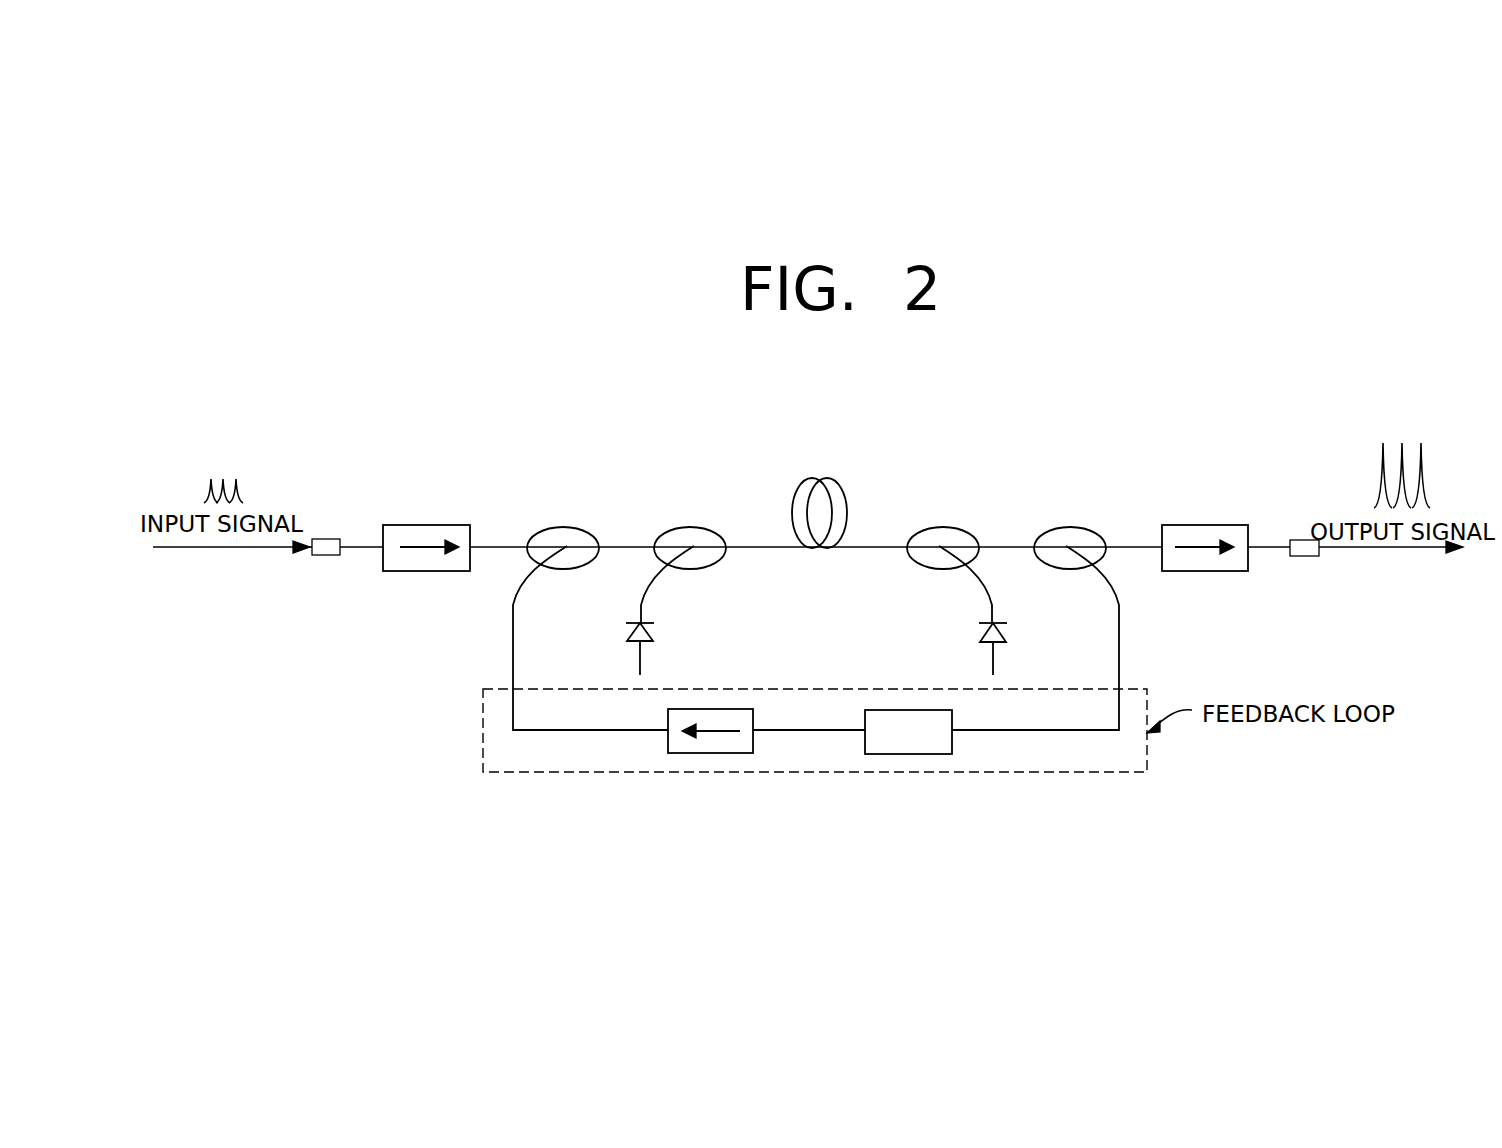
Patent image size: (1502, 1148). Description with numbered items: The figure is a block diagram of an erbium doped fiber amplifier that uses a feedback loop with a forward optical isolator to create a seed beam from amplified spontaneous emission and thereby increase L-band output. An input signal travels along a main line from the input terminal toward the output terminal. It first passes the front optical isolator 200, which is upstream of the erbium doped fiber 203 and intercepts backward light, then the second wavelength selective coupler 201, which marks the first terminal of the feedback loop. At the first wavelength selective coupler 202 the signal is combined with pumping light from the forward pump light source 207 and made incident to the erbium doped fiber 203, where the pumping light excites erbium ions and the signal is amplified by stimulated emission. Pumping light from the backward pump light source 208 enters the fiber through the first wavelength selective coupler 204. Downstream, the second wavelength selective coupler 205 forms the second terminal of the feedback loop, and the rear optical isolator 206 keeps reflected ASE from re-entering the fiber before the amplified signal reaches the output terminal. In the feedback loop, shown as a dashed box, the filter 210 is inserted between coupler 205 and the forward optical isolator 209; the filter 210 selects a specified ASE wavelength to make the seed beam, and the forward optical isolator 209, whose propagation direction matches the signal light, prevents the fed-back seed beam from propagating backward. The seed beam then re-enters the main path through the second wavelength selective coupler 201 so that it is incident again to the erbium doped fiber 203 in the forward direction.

The front optical isolator 200 is at (420, 527).
The second wavelength selective coupler 201 is at (560, 533).
The first wavelength selective coupler 202 is at (686, 535).
The erbium doped fiber 203 is at (821, 479).
The first wavelength selective coupler 204 is at (948, 535).
The second wavelength selective coupler 205 is at (1075, 535).
The rear optical isolator 206 is at (1202, 532).
The forward pump light source 207 is at (614, 647).
The backward pump light source 208 is at (1018, 648).
The forward optical isolator 209 is at (718, 709).
The filter 210 is at (903, 710).